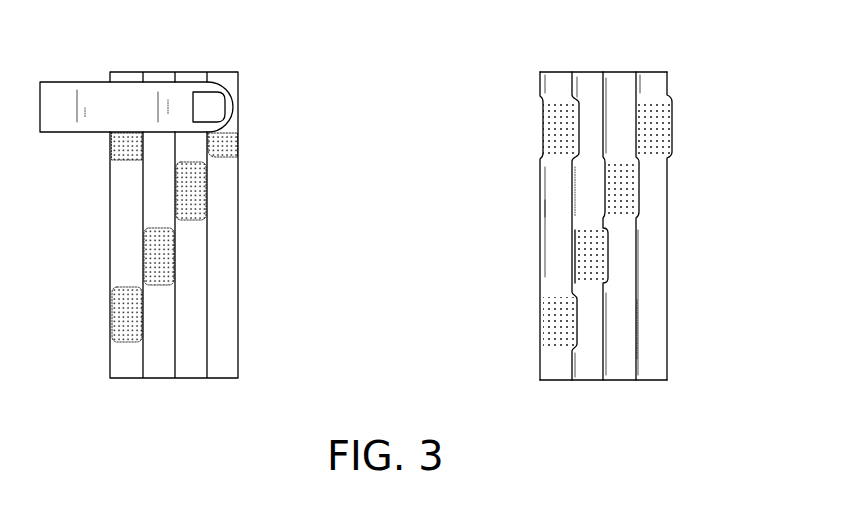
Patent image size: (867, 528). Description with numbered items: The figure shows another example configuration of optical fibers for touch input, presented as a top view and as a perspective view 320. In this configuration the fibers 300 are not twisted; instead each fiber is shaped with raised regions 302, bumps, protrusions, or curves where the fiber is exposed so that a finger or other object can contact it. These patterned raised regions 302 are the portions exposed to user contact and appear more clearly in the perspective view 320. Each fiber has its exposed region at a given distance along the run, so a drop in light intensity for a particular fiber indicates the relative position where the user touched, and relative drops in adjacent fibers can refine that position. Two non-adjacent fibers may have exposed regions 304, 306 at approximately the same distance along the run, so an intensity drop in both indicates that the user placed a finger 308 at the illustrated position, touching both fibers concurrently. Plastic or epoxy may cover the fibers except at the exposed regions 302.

The fibers 300 is at (215, 197).
The raised regions 302 is at (145, 248).
The exposed region 304 is at (124, 152).
The exposed region 306 is at (227, 148).
The finger 308 is at (103, 93).
The perspective view 320 is at (725, 124).